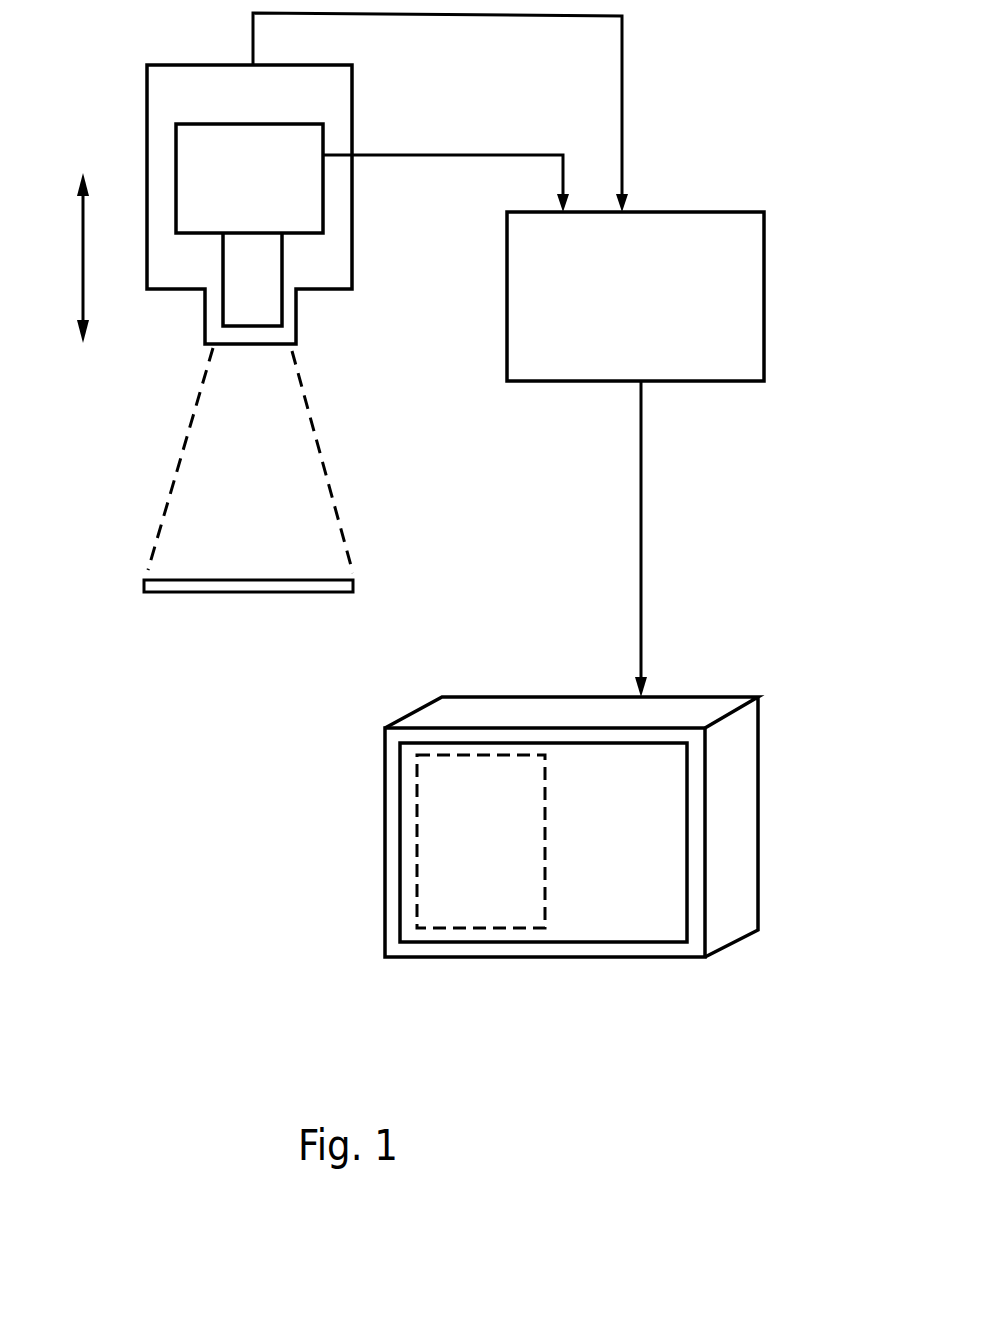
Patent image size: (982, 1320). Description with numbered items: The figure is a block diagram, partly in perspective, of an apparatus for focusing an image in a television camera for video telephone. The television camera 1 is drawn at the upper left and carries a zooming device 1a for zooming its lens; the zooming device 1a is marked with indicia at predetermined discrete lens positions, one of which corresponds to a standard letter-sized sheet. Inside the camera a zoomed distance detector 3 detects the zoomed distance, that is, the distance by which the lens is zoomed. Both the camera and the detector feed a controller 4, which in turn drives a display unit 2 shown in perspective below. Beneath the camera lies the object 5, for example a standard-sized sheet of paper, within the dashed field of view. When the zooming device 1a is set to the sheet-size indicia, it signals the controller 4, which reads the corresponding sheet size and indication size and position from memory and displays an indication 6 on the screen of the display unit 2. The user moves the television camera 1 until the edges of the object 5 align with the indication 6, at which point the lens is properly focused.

The television camera 1 is at (352, 93).
The zooming device 1a is at (282, 268).
The display unit 2 is at (763, 743).
The zoomed distance detector 3 is at (323, 213).
The controller 4 is at (764, 322).
The object 5 is at (253, 593).
The indication 6 is at (438, 928).